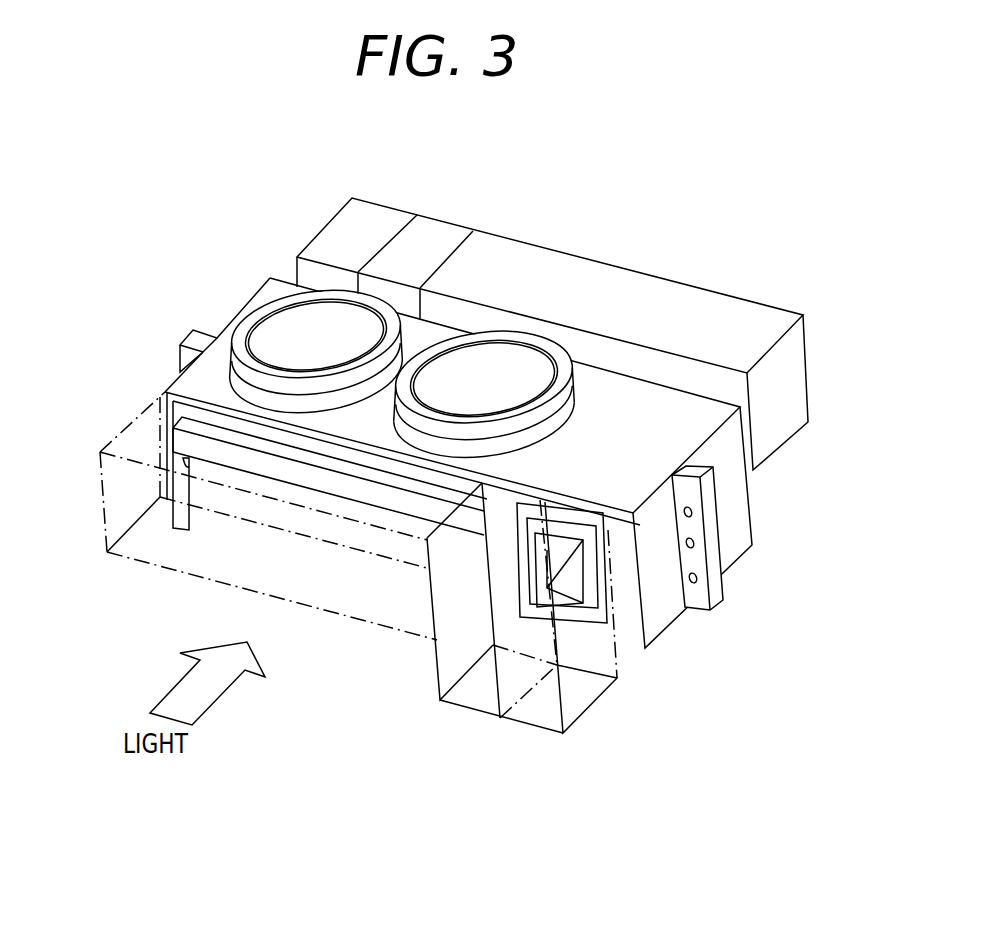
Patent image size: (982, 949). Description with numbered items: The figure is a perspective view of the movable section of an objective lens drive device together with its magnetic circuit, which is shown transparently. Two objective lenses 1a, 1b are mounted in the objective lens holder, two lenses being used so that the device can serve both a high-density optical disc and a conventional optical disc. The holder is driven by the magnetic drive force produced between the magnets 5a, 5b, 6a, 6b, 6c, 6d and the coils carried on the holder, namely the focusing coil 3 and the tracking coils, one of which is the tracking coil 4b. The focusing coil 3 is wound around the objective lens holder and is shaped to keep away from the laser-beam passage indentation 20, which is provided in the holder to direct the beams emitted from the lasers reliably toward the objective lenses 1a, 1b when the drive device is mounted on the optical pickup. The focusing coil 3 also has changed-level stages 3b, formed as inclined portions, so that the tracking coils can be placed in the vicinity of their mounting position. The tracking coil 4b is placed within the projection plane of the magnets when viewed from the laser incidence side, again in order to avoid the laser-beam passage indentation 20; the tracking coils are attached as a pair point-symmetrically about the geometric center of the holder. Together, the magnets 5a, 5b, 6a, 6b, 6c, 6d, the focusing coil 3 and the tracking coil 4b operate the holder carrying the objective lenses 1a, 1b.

The objective lens 1a is at (493, 360).
The objective lens 1b is at (277, 337).
The focusing coil 3 is at (407, 498).
The changed-level stages 3b is at (427, 540).
The tracking coil 4b is at (600, 603).
The magnet 5a is at (122, 416).
The magnet 5b is at (627, 290).
The magnet 6a is at (590, 710).
The magnet 6b is at (470, 710).
The magnet 6c is at (345, 240).
The magnet 6d is at (428, 240).
The laser-beam passage indentation 20 is at (230, 552).